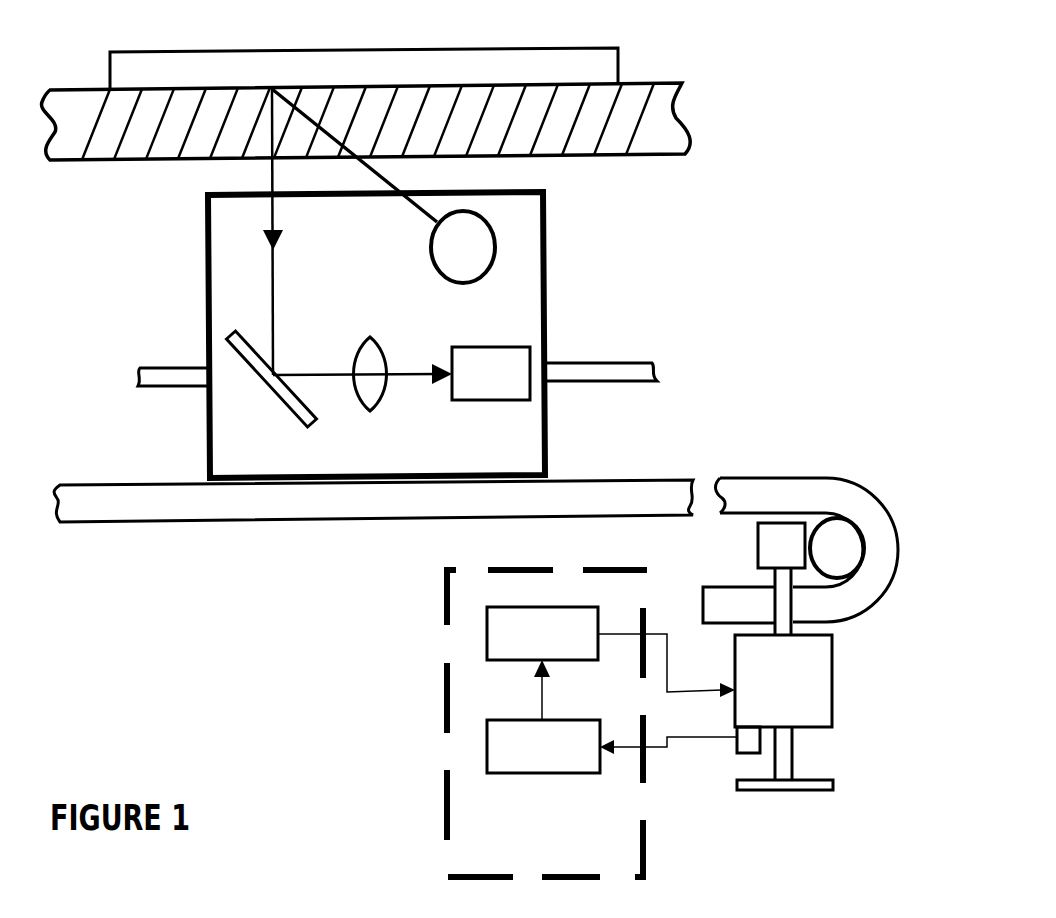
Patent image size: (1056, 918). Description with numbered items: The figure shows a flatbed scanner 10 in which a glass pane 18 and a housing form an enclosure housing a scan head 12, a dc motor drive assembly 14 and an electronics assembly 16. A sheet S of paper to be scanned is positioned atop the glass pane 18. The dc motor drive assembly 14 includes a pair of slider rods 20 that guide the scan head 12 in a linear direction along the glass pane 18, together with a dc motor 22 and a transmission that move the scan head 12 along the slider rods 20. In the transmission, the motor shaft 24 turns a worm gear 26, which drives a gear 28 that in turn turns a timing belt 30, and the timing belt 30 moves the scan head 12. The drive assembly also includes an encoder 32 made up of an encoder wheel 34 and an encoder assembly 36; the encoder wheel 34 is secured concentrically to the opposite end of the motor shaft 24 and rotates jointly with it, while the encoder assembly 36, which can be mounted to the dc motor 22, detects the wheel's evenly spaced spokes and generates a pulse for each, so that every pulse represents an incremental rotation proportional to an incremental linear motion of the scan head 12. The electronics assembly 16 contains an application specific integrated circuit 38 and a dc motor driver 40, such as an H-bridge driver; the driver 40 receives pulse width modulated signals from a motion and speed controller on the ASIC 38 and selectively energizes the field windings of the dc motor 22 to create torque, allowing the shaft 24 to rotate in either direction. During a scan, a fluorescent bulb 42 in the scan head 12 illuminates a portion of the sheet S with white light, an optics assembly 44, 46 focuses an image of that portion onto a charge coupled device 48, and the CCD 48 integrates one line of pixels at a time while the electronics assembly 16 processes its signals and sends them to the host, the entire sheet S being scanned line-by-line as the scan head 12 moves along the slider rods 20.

The flatbed scanner 10 is at (212, 628).
The sheet S is at (618, 62).
The glass pane 18 is at (693, 119).
The scan head 12 is at (556, 263).
The fluorescent bulb 42 is at (495, 247).
The slider rods 20 is at (640, 363).
The optics assembly 44 is at (316, 418).
The optics assembly 46 is at (357, 347).
The charge coupled device 48 is at (488, 347).
The dc motor drive assembly 14 is at (952, 555).
The timing belt 30 is at (885, 503).
The worm gear 26 is at (758, 536).
The gear 28 is at (816, 519).
The motor shaft 24 is at (792, 765).
The dc motor 22 is at (833, 692).
The encoder wheel 34 is at (833, 786).
The encoder 32 is at (803, 800).
The encoder assembly 36 is at (737, 751).
The electronics assembly 16 is at (662, 845).
The dc motor driver 40 is at (487, 632).
The application specific integrated circuit 38 is at (487, 748).